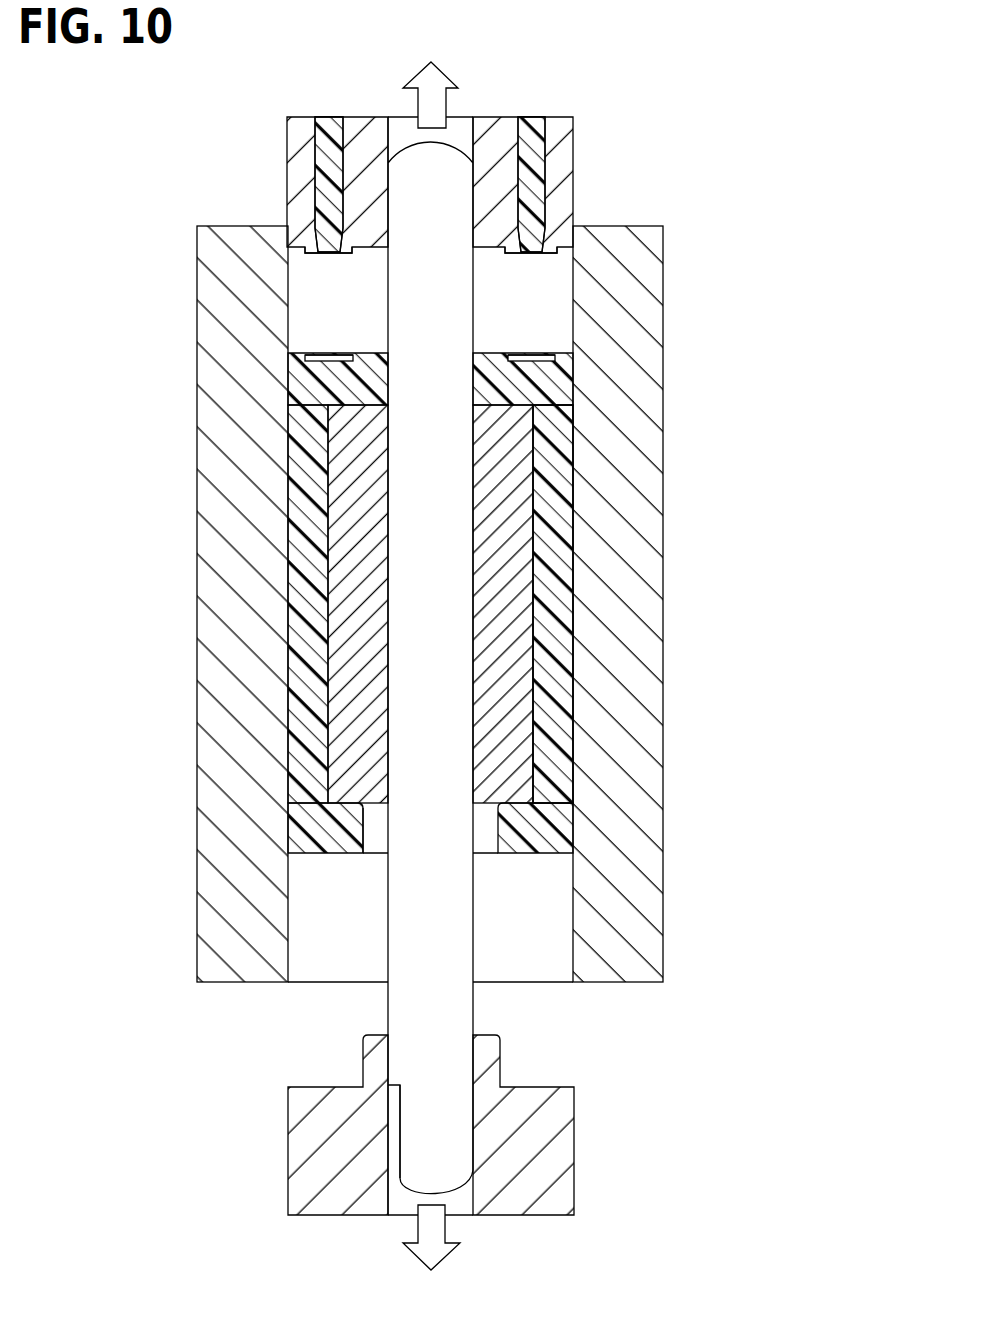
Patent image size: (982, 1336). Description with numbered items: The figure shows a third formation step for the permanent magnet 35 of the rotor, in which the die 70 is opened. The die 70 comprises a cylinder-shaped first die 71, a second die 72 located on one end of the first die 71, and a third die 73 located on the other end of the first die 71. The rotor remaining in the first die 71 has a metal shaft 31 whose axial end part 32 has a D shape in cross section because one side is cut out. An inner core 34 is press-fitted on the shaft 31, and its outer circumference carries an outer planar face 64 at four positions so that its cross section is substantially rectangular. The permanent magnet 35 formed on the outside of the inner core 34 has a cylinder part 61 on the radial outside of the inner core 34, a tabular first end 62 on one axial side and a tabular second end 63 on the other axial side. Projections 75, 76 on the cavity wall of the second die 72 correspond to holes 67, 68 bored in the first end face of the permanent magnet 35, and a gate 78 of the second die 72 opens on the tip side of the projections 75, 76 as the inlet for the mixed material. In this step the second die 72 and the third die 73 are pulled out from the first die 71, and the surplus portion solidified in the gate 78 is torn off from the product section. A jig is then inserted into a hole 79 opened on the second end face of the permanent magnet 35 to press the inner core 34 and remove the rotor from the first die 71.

The die 70 is at (377, 639).
The first die 71 is at (213, 622).
The second die 72 is at (560, 173).
The third die 73 is at (555, 1148).
The projection 75 is at (313, 254).
The projection 76 is at (545, 254).
The gate 78 is at (329, 117).
The hole 79 is at (377, 832).
The hole 67 is at (333, 353).
The hole 68 is at (540, 353).
The first end 62 is at (500, 382).
The second end 63 is at (508, 832).
The cylinder part 61 is at (553, 712).
The permanent magnet 35 is at (553, 563).
The inner core 34 is at (503, 647).
The shaft 31 is at (452, 478).
The axial end part 32 is at (448, 1137).
The outer planar face 64 is at (400, 1136).